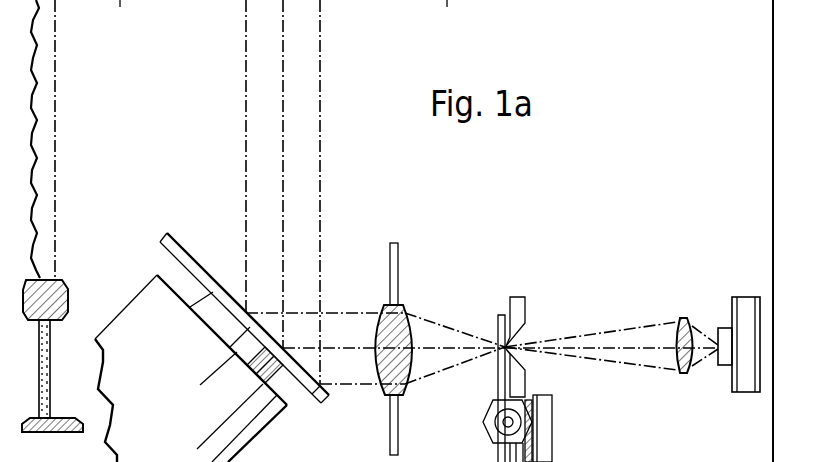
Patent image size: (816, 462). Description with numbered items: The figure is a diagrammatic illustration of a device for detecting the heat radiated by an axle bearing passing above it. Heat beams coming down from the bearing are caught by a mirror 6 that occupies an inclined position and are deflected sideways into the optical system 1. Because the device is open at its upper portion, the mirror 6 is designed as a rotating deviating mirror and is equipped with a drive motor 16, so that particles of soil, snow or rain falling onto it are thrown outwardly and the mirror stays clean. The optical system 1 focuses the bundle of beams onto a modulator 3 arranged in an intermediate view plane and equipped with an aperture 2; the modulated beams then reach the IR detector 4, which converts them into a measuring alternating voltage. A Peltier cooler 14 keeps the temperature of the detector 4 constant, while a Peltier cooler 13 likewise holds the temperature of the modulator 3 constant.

The optical system 1 is at (538, 319).
The aperture 2 is at (520, 375).
The modulator 3 is at (492, 423).
The IR detector 4 is at (725, 335).
The mirror 6 is at (203, 262).
The Peltier cooler 13 is at (552, 455).
The Peltier cooler 14 is at (746, 308).
The drive motor 16 is at (233, 446).